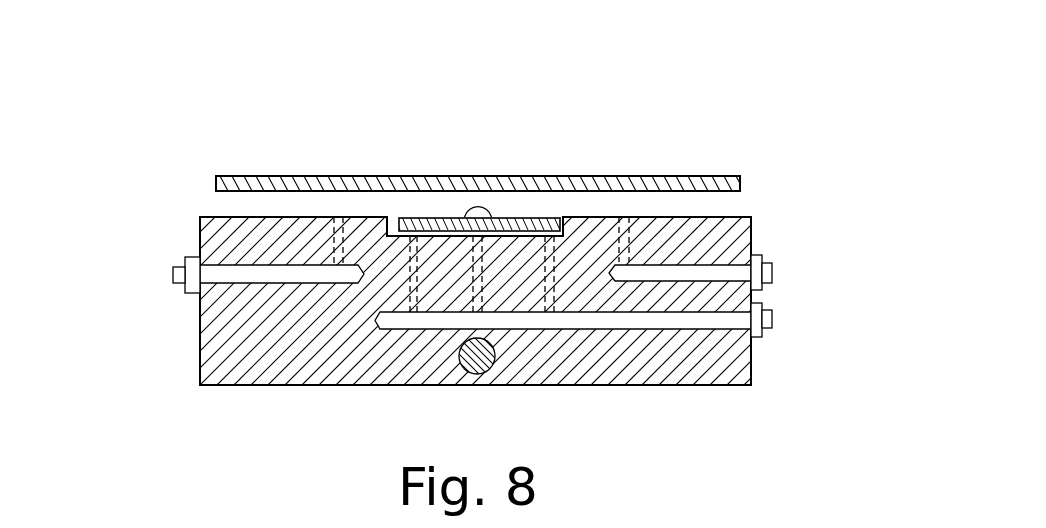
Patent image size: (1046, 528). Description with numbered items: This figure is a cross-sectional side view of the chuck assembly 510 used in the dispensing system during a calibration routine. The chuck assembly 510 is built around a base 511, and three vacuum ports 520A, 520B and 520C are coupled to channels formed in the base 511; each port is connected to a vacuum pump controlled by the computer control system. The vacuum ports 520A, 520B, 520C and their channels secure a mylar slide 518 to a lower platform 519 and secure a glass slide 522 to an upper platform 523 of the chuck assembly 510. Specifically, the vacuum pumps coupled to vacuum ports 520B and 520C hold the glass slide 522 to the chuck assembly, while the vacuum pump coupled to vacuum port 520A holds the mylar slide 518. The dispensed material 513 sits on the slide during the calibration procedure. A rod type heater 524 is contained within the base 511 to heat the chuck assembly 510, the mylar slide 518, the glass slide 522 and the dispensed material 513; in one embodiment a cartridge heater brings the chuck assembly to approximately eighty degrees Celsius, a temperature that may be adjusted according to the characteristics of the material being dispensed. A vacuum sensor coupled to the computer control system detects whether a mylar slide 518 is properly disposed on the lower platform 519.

The chuck assembly 510 is at (828, 127).
The base 511 is at (322, 350).
The dispensed material 513 is at (480, 205).
The mylar slide 518 is at (535, 213).
The lower platform 519 is at (390, 233).
The vacuum port 520A is at (767, 268).
The vacuum port 520B is at (767, 315).
The vacuum port 520C is at (175, 267).
The glass slide 522 is at (693, 175).
The upper platform 523 is at (209, 217).
The rod type heater 524 is at (477, 365).